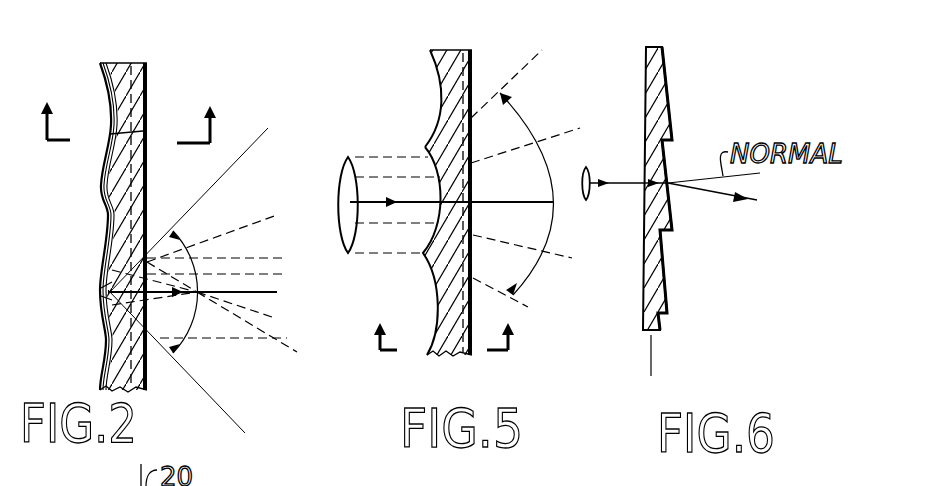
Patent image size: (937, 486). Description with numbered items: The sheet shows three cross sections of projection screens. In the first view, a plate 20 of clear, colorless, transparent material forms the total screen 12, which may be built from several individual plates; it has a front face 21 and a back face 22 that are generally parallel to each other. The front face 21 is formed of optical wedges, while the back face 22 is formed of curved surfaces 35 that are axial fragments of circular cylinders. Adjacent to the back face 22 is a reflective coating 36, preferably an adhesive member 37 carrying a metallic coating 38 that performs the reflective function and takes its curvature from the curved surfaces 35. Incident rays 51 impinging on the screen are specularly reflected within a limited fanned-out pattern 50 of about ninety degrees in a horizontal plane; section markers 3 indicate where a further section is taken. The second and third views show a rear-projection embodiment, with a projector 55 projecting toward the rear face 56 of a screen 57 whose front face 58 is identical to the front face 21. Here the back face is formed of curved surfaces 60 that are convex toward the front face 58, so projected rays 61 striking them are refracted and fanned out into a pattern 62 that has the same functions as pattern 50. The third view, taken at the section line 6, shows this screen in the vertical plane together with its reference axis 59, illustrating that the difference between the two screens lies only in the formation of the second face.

In FIG. 2, the screen 12 is at (151, 91).
In FIG. 2, the plate 20 is at (132, 68).
In FIG. 2, the front face 21 is at (151, 191).
In FIG. 2, the back face 22 is at (108, 207).
In FIG. 2, the curved surfaces 35 is at (104, 302).
In FIG. 2, the reflective coating 36 is at (106, 60).
In FIG. 2, the adhesive member 37 is at (102, 153).
In FIG. 2, the metallic coating 38 is at (123, 135).
In FIG. 2, the pattern 50 is at (192, 280).
In FIG. 2, the incident rays 51 is at (261, 258).
In FIG. 5, the projector 55 is at (345, 160).
In FIG. 6, the projector 55 is at (594, 198).
In FIG. 5, the rear face 56 is at (436, 82).
In FIG. 5, the screen 57 is at (447, 50).
In FIG. 6, the screen 57 is at (655, 46).
In FIG. 5, the front face 58 is at (471, 135).
In FIG. 6, the front face 58 is at (674, 108).
In FIG. 6, the reference axis 59 is at (652, 356).
In FIG. 5, the curved surfaces 60 is at (430, 283).
In FIG. 5, the projected rays 61 is at (401, 156).
In FIG. 5, the pattern 62 is at (526, 194).
In FIG. 2, the section line 3- 3 is at (132, 122).
In FIG. 5, the section line 6- 6 is at (442, 341).